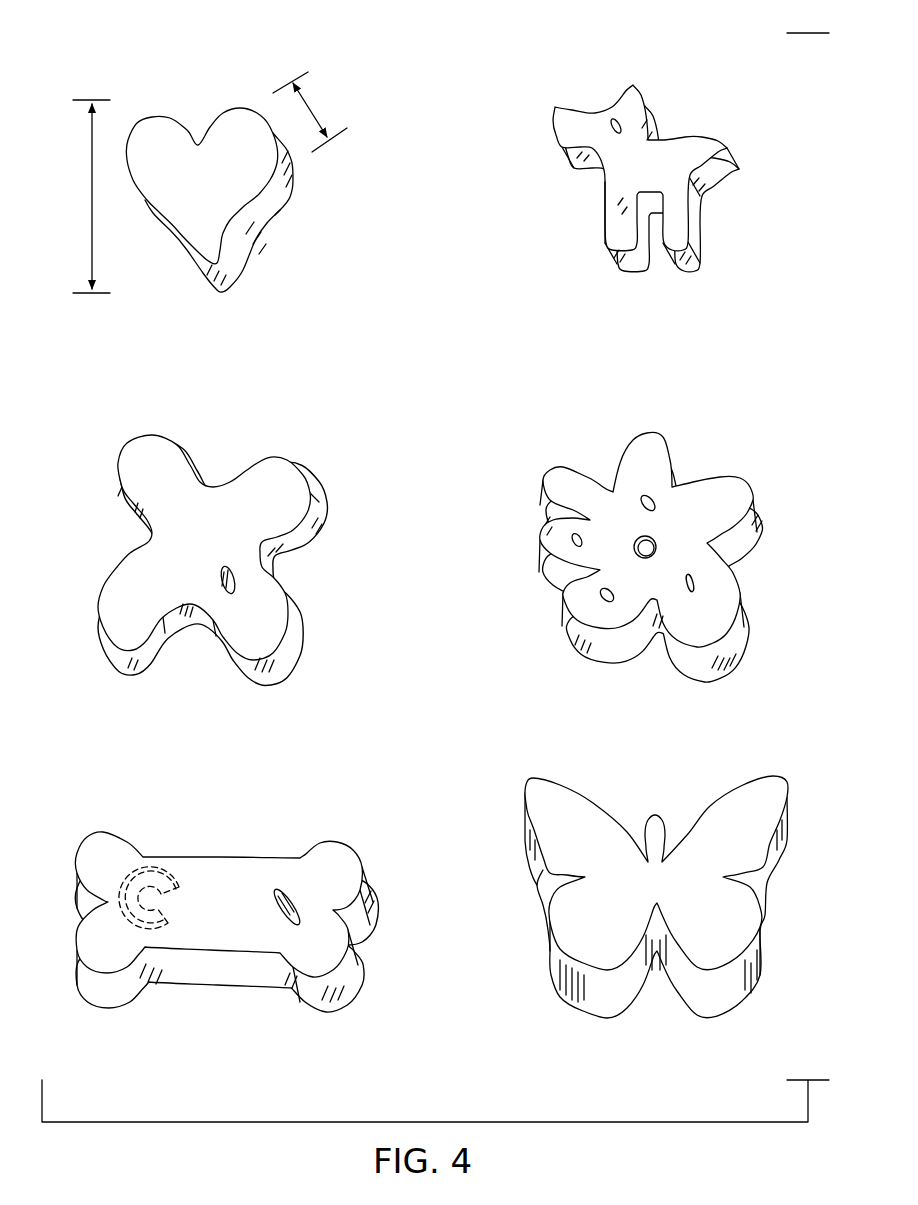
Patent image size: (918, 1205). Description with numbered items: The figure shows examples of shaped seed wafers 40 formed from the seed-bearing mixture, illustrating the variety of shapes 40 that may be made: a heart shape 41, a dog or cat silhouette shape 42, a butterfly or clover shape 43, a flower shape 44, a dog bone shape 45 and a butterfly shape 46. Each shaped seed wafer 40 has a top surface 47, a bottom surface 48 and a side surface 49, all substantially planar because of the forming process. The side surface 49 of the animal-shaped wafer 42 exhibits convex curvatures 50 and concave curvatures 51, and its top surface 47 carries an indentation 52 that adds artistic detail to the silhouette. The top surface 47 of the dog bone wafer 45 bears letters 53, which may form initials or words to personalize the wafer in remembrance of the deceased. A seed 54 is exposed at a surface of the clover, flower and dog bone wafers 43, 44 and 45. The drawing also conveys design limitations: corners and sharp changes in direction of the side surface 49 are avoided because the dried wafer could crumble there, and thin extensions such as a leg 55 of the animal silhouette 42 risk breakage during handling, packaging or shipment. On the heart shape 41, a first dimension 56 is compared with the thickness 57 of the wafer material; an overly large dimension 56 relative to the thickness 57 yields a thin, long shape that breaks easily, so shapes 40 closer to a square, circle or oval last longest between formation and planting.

The shaped seed wafer 40 is at (386, 104).
The heart shape 41 is at (226, 176).
The dog or cat silhouette shape 42 is at (636, 159).
The butterfly or clover shape 43 is at (186, 566).
The flower shape 44 is at (686, 531).
The dog bone shape 45 is at (225, 913).
The butterfly shape 46 is at (695, 921).
The top surface 47 is at (236, 133).
The bottom surface 48 is at (251, 265).
The side surface 49 is at (274, 187).
The convex curvature 50 is at (604, 243).
The concave curvature 51 is at (715, 192).
The indentation 52 is at (616, 118).
The letters 53 is at (166, 873).
The seed 54 is at (238, 577).
The leg 55 is at (603, 201).
The first dimension 56 is at (92, 213).
The thickness 57 is at (311, 108).